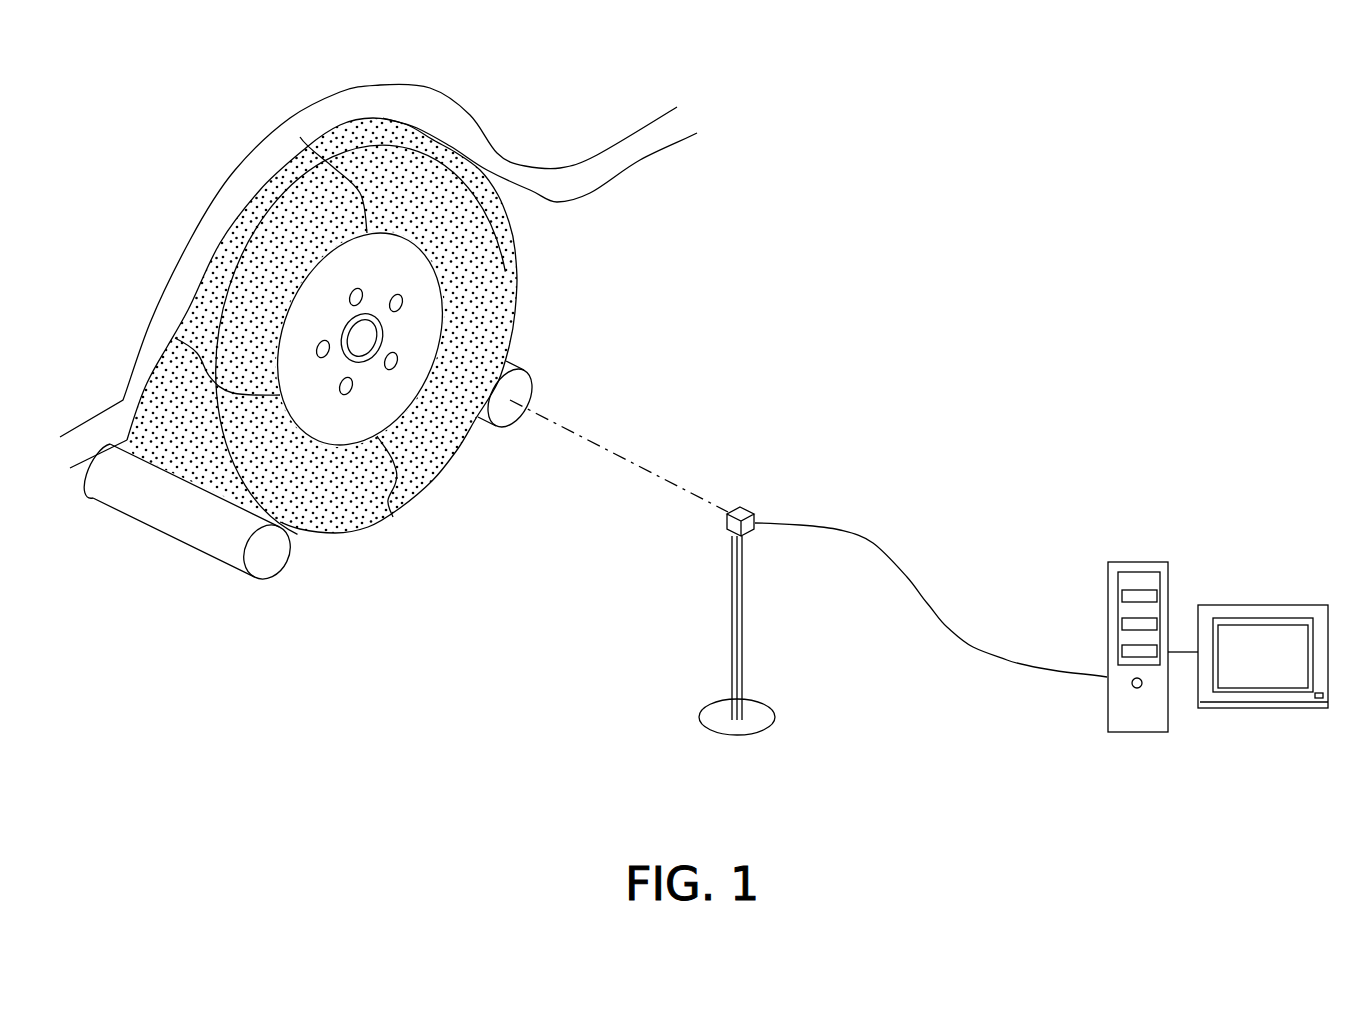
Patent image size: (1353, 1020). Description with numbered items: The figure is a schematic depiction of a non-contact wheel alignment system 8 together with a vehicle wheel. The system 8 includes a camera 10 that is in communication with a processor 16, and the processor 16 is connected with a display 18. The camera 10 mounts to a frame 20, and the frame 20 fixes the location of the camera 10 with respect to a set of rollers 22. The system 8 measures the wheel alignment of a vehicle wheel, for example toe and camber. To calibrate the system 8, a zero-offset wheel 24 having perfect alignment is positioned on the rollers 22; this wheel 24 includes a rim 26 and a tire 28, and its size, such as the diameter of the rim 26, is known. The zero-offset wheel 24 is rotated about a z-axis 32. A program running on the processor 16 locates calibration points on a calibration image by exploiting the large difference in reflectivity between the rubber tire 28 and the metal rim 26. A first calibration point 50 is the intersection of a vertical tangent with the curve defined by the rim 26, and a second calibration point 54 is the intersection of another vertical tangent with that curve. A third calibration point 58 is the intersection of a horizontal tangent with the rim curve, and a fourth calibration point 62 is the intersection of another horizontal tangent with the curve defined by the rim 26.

The non-contact wheel alignment system 8 is at (984, 281).
The camera 10 is at (742, 507).
The processor 16 is at (1145, 560).
The display 18 is at (1278, 604).
The frame 20 is at (742, 604).
The rollers 22 is at (194, 537).
The zero-offset wheel 24 is at (503, 149).
The rim 26 is at (392, 406).
The tire 28 is at (355, 505).
The z-axis 32 is at (573, 431).
The first calibration point 50 is at (175, 338).
The second calibration point 54 is at (450, 292).
The third calibration point 58 is at (300, 137).
The fourth calibration point 62 is at (393, 517).